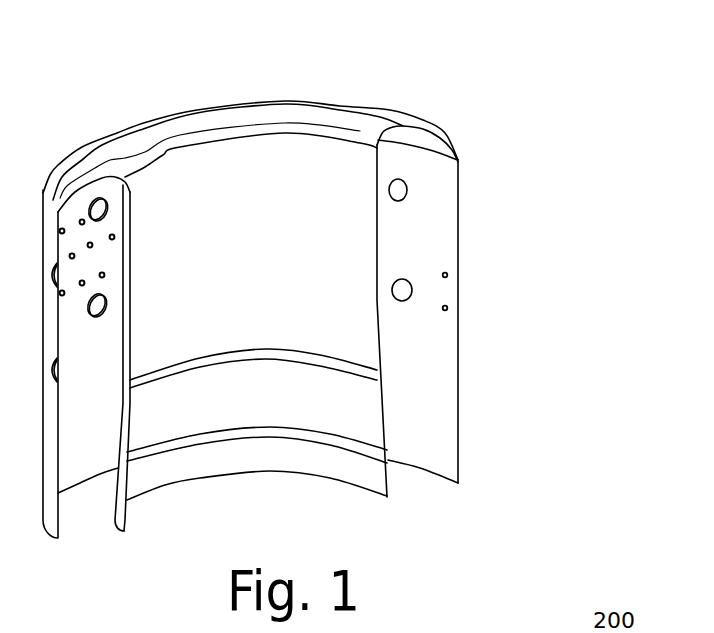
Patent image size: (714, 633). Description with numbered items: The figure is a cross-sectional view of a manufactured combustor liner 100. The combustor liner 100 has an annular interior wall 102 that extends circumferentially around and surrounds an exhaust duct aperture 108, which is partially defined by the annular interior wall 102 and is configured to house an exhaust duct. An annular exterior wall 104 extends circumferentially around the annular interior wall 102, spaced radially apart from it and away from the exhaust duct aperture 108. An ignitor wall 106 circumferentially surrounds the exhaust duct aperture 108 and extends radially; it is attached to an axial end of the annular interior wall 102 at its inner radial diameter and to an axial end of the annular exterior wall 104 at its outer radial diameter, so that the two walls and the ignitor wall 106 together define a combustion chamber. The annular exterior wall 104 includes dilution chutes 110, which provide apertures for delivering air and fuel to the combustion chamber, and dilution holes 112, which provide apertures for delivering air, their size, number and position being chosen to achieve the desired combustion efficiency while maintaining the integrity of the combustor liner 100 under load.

The combustor liner 100 is at (519, 92).
The annular interior wall 102 is at (270, 276).
The annular exterior wall 104 is at (108, 404).
The ignitor wall 106 is at (147, 130).
The exhaust duct aperture 108 is at (257, 498).
The dilution chutes 110 is at (404, 288).
The dilution holes 112 is at (447, 277).